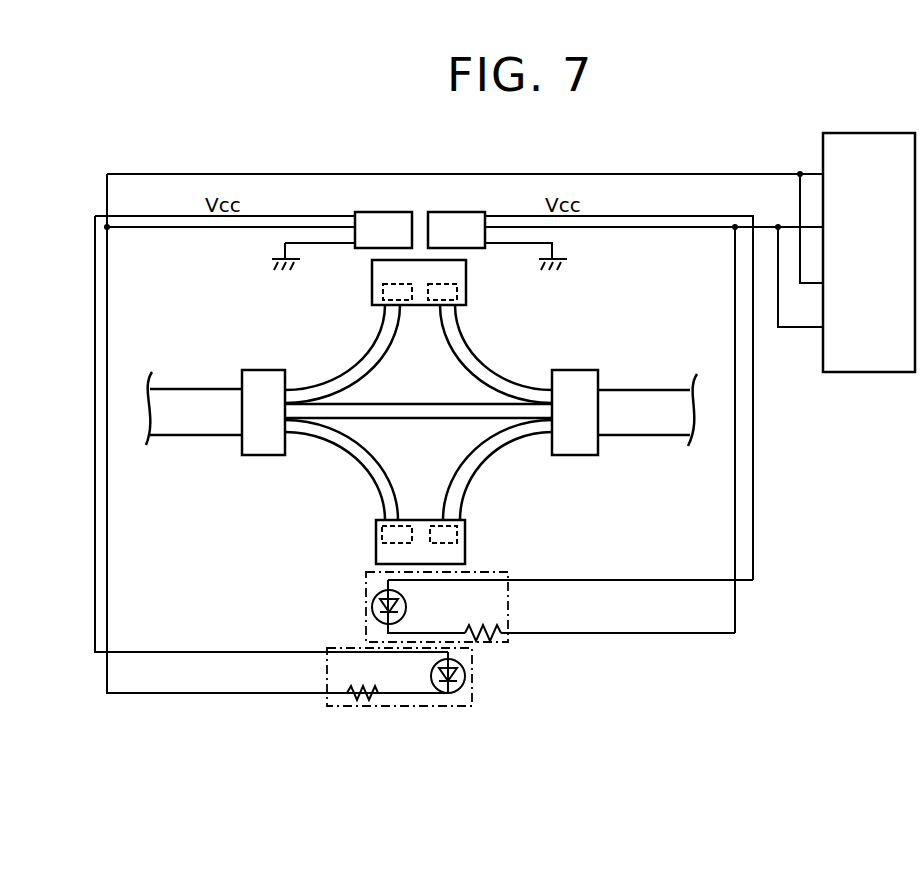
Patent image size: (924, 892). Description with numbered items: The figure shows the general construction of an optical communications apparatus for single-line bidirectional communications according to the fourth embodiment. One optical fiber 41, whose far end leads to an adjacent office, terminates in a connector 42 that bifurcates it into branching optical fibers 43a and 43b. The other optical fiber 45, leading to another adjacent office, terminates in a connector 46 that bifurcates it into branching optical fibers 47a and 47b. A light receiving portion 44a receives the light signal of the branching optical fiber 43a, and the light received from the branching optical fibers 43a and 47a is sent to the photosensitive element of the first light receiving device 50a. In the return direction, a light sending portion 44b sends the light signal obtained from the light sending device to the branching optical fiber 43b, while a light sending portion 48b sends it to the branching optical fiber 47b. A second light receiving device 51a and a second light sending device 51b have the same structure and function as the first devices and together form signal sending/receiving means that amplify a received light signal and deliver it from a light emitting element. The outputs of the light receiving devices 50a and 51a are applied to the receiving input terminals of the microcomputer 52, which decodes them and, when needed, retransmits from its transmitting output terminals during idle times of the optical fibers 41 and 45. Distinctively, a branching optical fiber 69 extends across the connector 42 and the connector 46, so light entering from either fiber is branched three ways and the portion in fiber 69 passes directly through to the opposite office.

The optical fiber 41 is at (641, 400).
The connector 42 is at (576, 382).
The branching optical fiber 43a is at (481, 377).
The branching optical fiber 43b is at (494, 443).
The light receiving portion 44a is at (462, 290).
The light sending portion 44b is at (462, 533).
The optical fiber 45 is at (198, 395).
The connector 46 is at (265, 380).
The branching optical fiber 47a is at (356, 380).
The branching optical fiber 47b is at (352, 444).
The light sending portion 48b is at (383, 291).
The first light receiving device 50a is at (461, 232).
The second light receiving device 51a is at (388, 232).
The second light sending device 51b is at (405, 710).
The microcomputer 52 is at (863, 355).
The branching optical fiber 69 is at (418, 408).